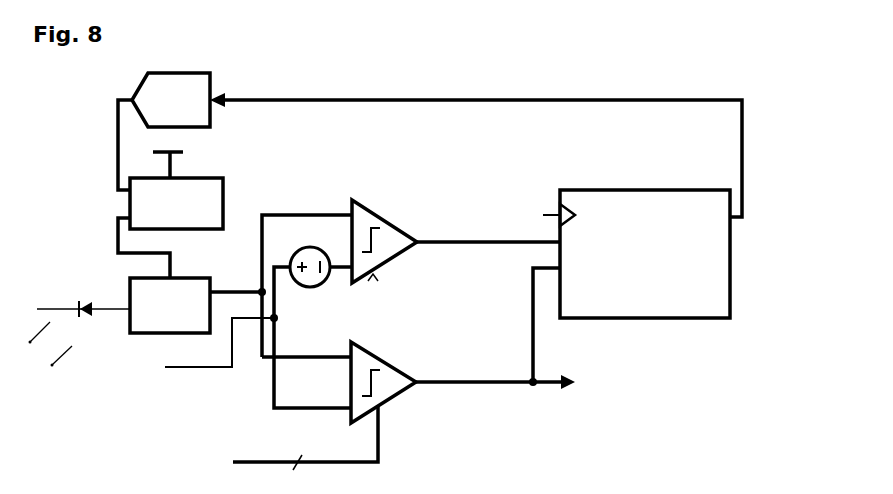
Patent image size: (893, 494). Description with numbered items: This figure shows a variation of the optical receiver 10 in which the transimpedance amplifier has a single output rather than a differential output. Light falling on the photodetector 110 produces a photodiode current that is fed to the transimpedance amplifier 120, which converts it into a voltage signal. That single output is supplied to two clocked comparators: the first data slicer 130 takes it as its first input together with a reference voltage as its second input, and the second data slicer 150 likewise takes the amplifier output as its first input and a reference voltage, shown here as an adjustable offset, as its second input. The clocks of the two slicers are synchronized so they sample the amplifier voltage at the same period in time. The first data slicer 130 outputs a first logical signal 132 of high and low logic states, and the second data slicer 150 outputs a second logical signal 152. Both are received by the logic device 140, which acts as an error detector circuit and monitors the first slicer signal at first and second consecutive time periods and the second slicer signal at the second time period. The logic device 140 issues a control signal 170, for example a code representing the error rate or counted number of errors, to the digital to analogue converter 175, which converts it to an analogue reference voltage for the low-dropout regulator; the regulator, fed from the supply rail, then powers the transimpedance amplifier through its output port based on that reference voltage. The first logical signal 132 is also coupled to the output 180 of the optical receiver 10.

The optical receiver 10 is at (706, 50).
The photodetector 110 is at (80, 311).
The transimpedance amplifier 120 is at (130, 321).
The first data slicer 130 is at (394, 362).
The first logical signal 132 is at (470, 378).
The logic device 140 is at (130, 196).
The second data slicer 150 is at (357, 200).
The second logical signal 152 is at (467, 240).
The control signal 170 is at (587, 98).
The digital to analogue converter 175 is at (178, 72).
The output 180 is at (587, 374).